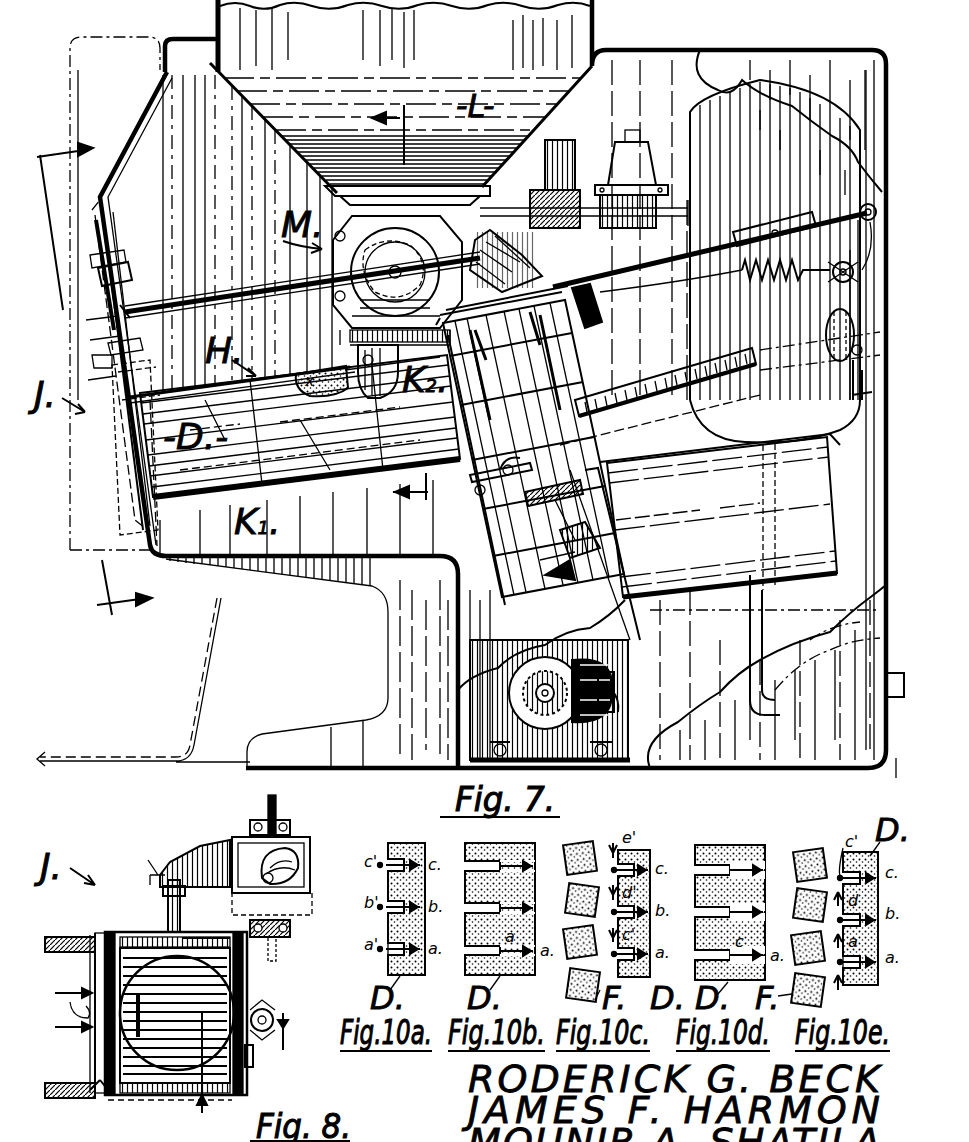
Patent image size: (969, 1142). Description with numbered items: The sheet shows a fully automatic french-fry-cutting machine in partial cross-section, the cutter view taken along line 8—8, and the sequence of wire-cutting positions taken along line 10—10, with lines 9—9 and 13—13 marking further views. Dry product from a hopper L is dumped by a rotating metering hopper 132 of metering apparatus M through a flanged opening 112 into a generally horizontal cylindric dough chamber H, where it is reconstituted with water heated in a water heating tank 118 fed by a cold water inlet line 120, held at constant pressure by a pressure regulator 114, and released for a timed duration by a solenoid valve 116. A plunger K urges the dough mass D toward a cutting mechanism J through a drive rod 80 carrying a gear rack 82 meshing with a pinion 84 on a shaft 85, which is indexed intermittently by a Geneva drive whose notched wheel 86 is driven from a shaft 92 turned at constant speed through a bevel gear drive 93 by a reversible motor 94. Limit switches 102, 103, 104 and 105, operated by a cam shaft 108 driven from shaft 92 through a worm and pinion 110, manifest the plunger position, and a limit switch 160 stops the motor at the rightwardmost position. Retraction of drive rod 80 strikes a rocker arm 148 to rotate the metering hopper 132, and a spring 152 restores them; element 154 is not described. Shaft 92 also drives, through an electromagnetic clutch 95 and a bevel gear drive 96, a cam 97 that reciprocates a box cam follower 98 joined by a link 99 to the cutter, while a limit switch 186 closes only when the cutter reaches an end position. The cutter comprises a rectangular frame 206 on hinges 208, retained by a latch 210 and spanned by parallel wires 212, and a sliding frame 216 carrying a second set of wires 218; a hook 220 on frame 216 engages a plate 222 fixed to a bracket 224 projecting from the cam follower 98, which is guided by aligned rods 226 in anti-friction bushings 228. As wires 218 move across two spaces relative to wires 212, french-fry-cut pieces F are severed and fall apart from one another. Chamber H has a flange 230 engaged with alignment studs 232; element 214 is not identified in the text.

In FIG. 7, the line 8— 8 is at (113, 372).
In FIG. 8, the line 9— 9 is at (240, 1077).
In FIG. 8, the line 10— 10 is at (54, 1012).
In FIG. 7, the line 13— 13 is at (377, 312).
In FIG. 7, the drive rod 80 is at (612, 426).
In FIG. 7, the gear rack 82 is at (640, 374).
In FIG. 7, the pinion 84 is at (532, 441).
In FIG. 7, the shaft 85 is at (528, 532).
In FIG. 7, the notched wheel 86 is at (480, 510).
In FIG. 7, the shaft 92 is at (560, 556).
In FIG. 7, the bevel gear drive 93 is at (556, 574).
In FIG. 7, the motor 94 is at (700, 450).
In FIG. 7, the electromagnetic clutch 95 is at (575, 470).
In FIG. 7, the bevel gear drive 96 is at (512, 262).
In FIG. 8, the cam 97 is at (296, 863).
In FIG. 8, the box cam follower 98 is at (306, 842).
In FIG. 8, the link 99 is at (148, 851).
In FIG. 7, the limit switch 102 is at (614, 674).
In FIG. 7, the limit switch 103 is at (614, 690).
In FIG. 7, the limit switch 104 is at (614, 702).
In FIG. 7, the limit switch 105 is at (618, 712).
In FIG. 7, the cam shaft 108 is at (550, 751).
In FIG. 7, the worm and pinion 110 is at (598, 662).
In FIG. 7, the flanged opening 112 is at (358, 344).
In FIG. 7, the pressure regulator 114 is at (644, 146).
In FIG. 7, the solenoid valve 116 is at (570, 150).
In FIG. 7, the water heating tank 118 is at (712, 105).
In FIG. 7, the cold water inlet line 120 is at (775, 603).
In FIG. 7, the metering hopper 132 is at (410, 188).
In FIG. 7, the rocker arm 148 is at (840, 295).
In FIG. 7, the spring 152 is at (750, 280).
In FIG. 7, the latch 154 is at (828, 340).
In FIG. 7, the limit switch 160 is at (858, 378).
In FIG. 7, the limit switch 186 is at (594, 312).
In FIG. 7, the rectangular frame 206 is at (100, 540).
In FIG. 8, the rectangular frame 206 is at (105, 935).
In FIG. 8, the hinges 208 is at (72, 1083).
In FIG. 8, the latch 210 is at (255, 1067).
In FIG. 10A, the wires 212 is at (420, 958).
In FIG. 10E, the wires 212 is at (868, 968).
In FIG. 8, the bottom plate 214 is at (98, 1090).
In FIG. 7, the frame 216 is at (140, 390).
In FIG. 8, the frame 216 is at (218, 935).
In FIG. 10A, the second set of wires 218 is at (382, 957).
In FIG. 10E, the second set of wires 218 is at (850, 970).
In FIG. 7, the hook 220 is at (94, 360).
In FIG. 8, the hook 220 is at (168, 905).
In FIG. 7, the plate 222 is at (143, 348).
In FIG. 8, the plate 222 is at (163, 890).
In FIG. 8, the bracket 224 is at (215, 860).
In FIG. 7, the rods 226 is at (108, 222).
In FIG. 8, the rods 226 is at (277, 948).
In FIG. 7, the anti-friction bushing 228 is at (112, 262).
In FIG. 8, the anti-friction bushing 228 is at (290, 928).
In FIG. 8, the flange 230 is at (271, 1010).
In FIG. 8, the alignment studs 232 is at (268, 1018).